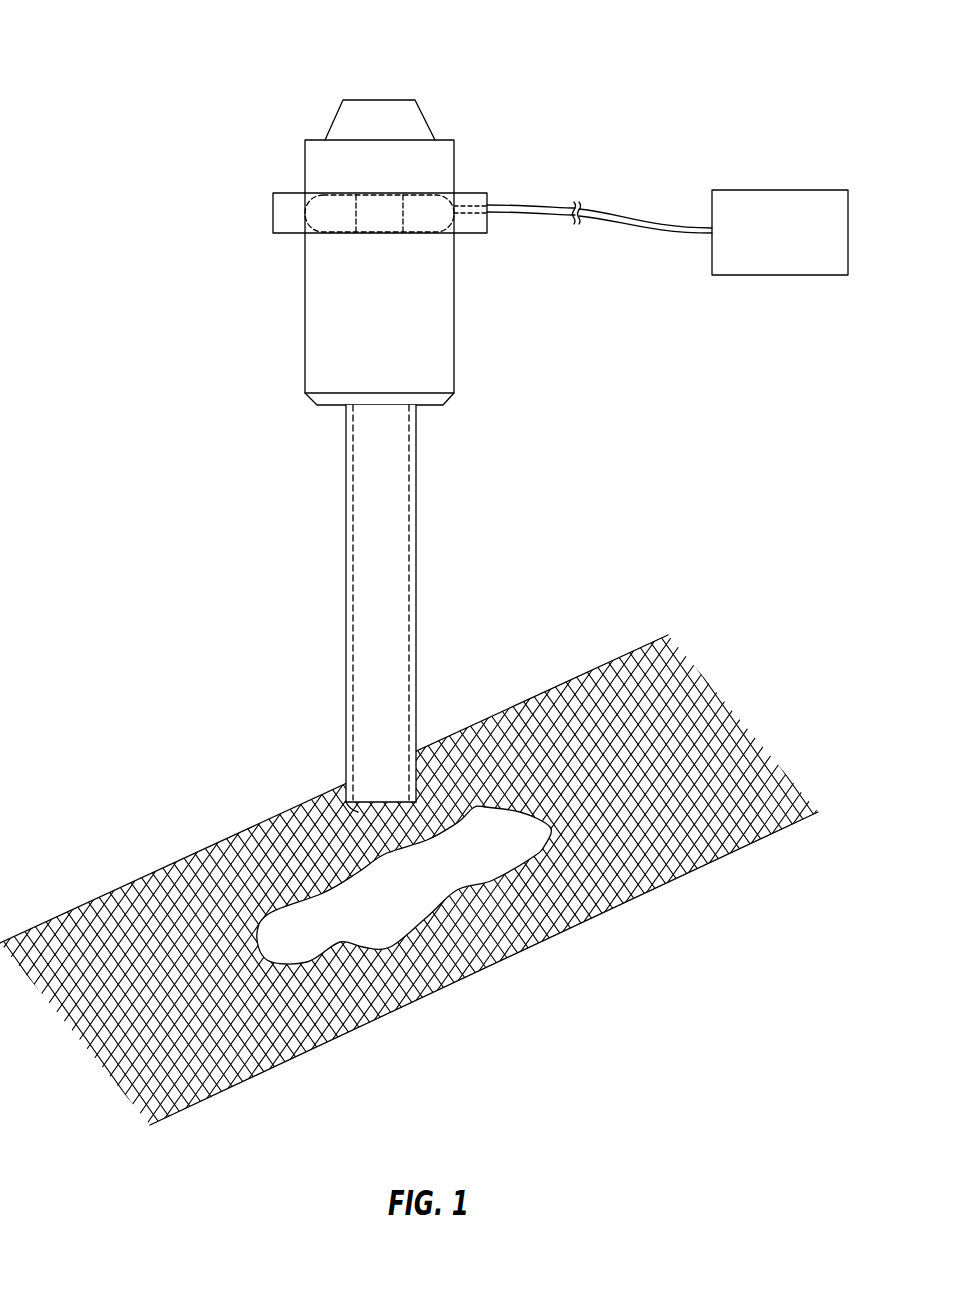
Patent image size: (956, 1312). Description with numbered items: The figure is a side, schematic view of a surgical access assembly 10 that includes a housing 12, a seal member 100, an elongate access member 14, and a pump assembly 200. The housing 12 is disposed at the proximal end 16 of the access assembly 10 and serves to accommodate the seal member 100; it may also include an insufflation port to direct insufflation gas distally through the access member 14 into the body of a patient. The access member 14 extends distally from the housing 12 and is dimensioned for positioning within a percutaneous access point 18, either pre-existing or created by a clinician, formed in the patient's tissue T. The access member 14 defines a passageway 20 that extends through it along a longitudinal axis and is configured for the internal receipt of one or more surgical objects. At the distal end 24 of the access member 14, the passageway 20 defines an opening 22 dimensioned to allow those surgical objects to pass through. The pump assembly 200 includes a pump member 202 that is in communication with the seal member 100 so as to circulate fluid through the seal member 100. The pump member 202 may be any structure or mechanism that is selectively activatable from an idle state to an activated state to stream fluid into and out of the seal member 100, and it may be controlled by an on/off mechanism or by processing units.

The surgical access assembly 10 is at (183, 82).
The housing 12 is at (488, 200).
The elongate access member 14 is at (416, 625).
The proximal end 16 is at (291, 180).
The percutaneous access point 18 is at (437, 912).
The passageway 20 is at (386, 538).
The opening 22 is at (364, 818).
The distal end 24 is at (343, 767).
The seal member 100 is at (432, 252).
The pump assembly 200 is at (728, 252).
The pump member 202 is at (780, 190).
The tissue T is at (672, 840).